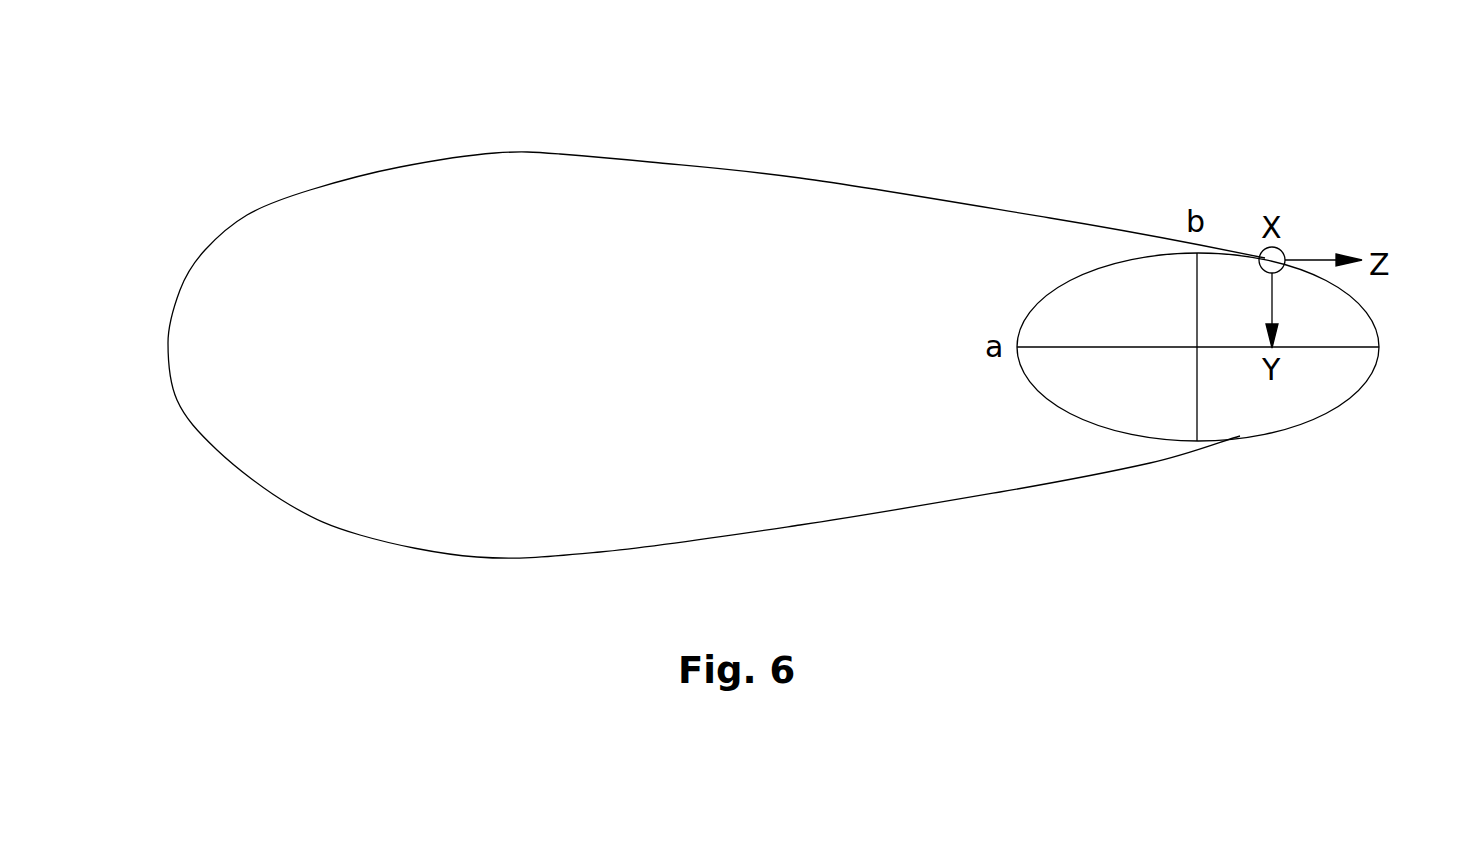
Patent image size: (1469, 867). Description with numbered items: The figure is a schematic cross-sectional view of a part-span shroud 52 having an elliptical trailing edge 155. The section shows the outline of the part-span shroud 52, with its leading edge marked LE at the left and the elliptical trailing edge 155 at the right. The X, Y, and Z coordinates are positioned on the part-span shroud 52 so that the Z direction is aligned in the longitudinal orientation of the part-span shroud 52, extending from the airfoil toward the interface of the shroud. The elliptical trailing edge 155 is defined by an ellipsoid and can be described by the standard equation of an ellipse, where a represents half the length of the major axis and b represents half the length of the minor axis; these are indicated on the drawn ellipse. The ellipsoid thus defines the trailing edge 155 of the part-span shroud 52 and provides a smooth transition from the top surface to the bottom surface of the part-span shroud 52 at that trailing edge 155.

The part-span shroud 52 is at (636, 160).
The elliptical trailing edge 155 is at (1370, 380).
The leading edge LE is at (168, 345).